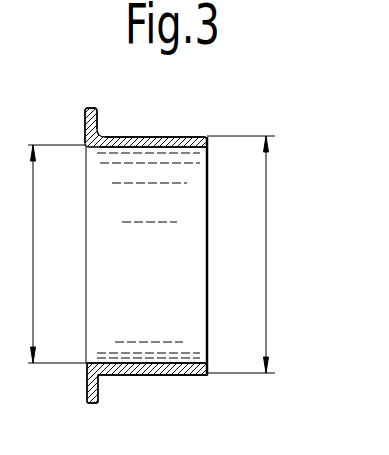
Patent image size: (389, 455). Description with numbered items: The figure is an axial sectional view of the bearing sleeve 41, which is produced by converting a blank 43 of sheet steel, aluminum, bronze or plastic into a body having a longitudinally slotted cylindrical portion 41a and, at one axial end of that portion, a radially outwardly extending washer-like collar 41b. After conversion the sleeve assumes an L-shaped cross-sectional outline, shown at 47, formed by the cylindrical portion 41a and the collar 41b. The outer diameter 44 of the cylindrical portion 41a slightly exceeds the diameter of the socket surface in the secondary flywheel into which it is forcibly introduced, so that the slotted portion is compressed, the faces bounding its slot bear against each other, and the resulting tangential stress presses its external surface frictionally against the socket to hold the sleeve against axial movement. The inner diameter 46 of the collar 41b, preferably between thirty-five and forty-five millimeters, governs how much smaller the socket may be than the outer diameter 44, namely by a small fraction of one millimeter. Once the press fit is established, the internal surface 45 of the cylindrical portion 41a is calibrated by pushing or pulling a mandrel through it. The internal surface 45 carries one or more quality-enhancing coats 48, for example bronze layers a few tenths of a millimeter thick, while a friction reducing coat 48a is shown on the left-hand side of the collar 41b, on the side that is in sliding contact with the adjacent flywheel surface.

The bearing sleeve 41 is at (152, 98).
The cylindrical portion 41a is at (193, 137).
The collar 41b is at (91, 107).
The converted blank 43 is at (190, 373).
The outer diameter 44 is at (251, 254).
The internal surface 45 is at (157, 364).
The inner diameter 46 is at (45, 254).
The L-shaped cross-sectional outline 47 is at (119, 377).
The coat 48 is at (107, 364).
The friction reducing coat 48a is at (86, 385).